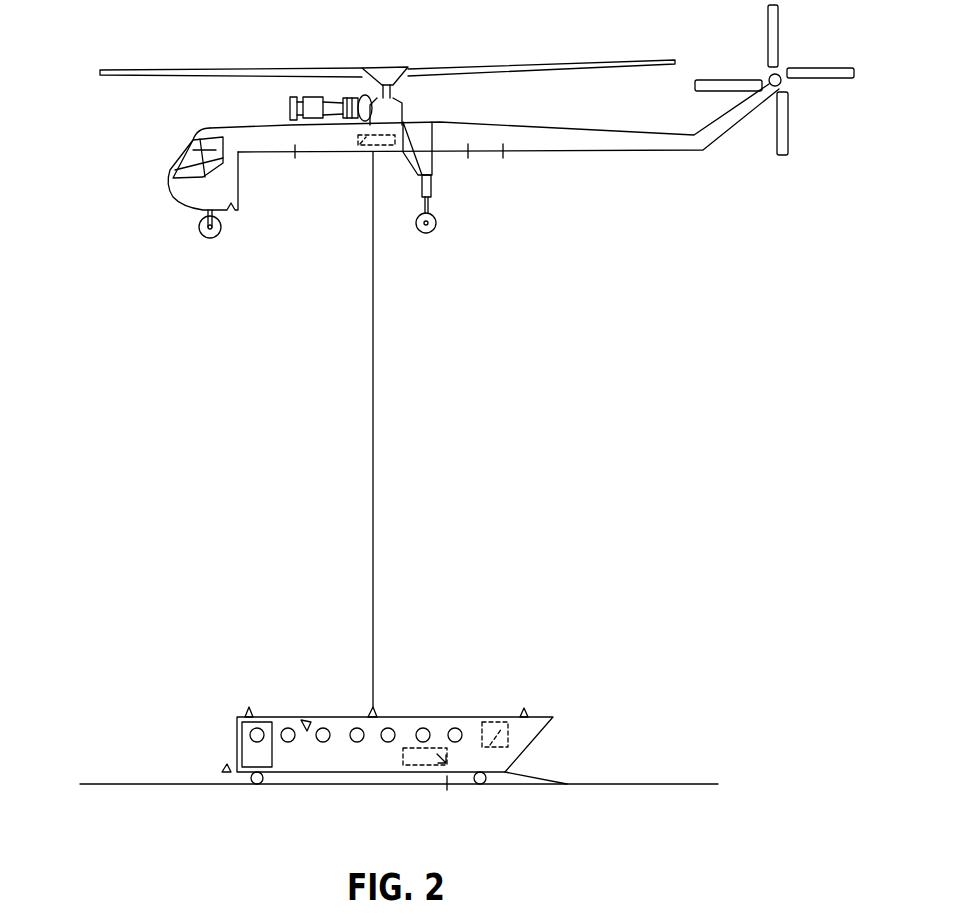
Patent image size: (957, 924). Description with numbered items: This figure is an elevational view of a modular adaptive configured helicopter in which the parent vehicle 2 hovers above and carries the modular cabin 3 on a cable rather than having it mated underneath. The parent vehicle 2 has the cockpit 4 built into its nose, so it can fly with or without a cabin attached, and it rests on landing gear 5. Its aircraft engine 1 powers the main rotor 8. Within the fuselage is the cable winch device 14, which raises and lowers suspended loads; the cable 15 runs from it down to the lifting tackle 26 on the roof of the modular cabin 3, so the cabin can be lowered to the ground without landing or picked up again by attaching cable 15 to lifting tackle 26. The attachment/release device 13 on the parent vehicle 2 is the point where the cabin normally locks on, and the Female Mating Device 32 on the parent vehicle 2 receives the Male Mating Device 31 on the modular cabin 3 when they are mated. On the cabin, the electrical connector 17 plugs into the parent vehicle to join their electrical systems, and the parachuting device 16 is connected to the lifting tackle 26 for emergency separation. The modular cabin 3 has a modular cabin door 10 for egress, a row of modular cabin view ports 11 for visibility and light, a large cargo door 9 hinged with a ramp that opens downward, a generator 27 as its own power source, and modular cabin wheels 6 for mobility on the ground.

The aircraft engine 1 is at (290, 106).
The parent vehicle 2 is at (538, 138).
The modular cabin 3 is at (371, 752).
The cockpit 4 is at (192, 152).
The landing gear 5 is at (436, 229).
The modular cabin wheel 6 is at (249, 784).
The main rotor 8 is at (497, 68).
The large cargo door 9 is at (543, 777).
The modular cabin door 10 is at (252, 750).
The modular cabin view port 11 is at (425, 728).
The attachment/release device 13 is at (295, 152).
The cable winch device 14 is at (358, 148).
The cable 15 is at (374, 443).
The parachuting device 16 is at (498, 718).
The electrical connector 17 is at (306, 724).
The lifting tackle 26 is at (378, 712).
The generator 27 is at (448, 782).
The Male Mating Device 31 is at (246, 713).
The Female Mating Device 32 is at (503, 153).